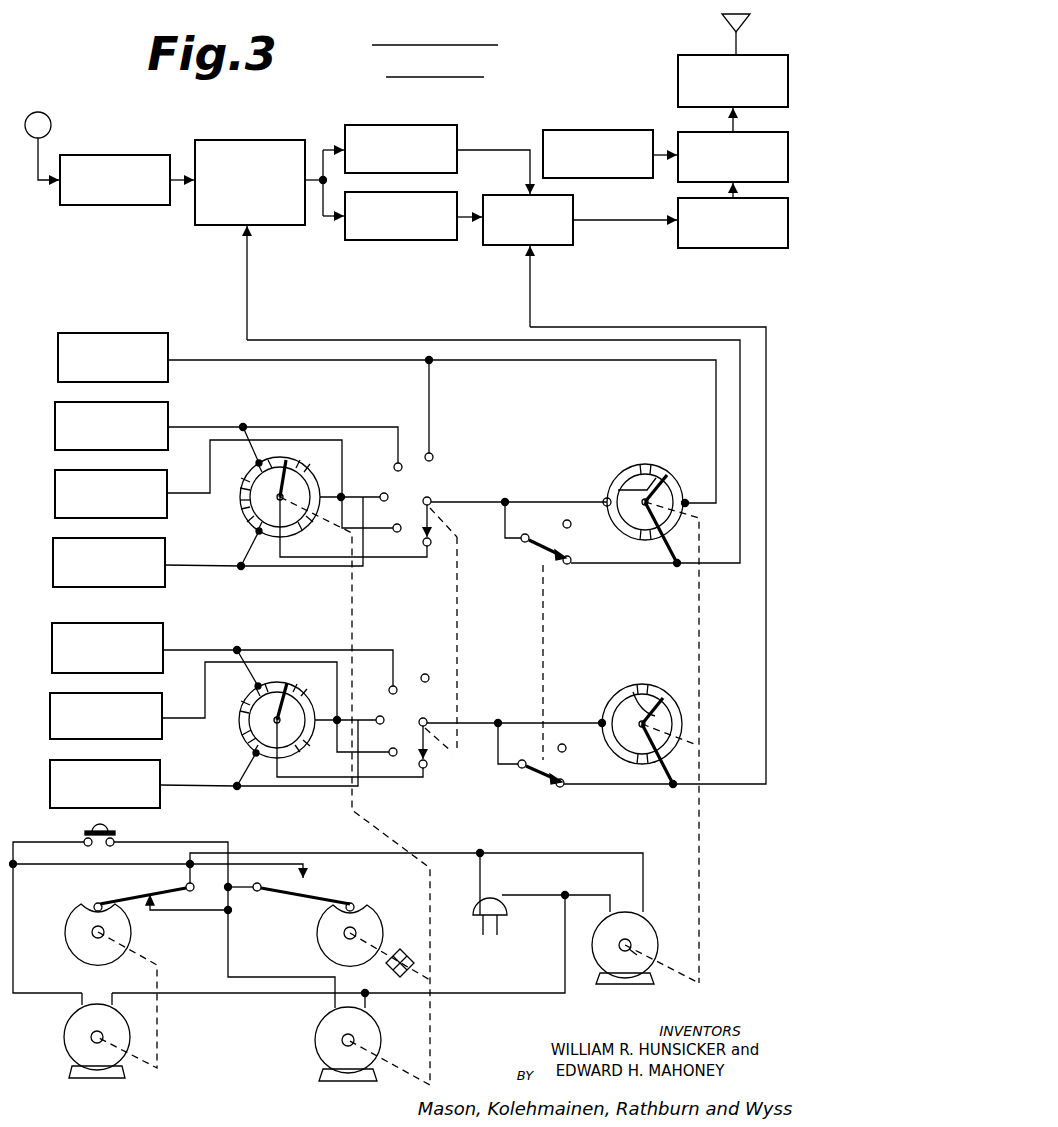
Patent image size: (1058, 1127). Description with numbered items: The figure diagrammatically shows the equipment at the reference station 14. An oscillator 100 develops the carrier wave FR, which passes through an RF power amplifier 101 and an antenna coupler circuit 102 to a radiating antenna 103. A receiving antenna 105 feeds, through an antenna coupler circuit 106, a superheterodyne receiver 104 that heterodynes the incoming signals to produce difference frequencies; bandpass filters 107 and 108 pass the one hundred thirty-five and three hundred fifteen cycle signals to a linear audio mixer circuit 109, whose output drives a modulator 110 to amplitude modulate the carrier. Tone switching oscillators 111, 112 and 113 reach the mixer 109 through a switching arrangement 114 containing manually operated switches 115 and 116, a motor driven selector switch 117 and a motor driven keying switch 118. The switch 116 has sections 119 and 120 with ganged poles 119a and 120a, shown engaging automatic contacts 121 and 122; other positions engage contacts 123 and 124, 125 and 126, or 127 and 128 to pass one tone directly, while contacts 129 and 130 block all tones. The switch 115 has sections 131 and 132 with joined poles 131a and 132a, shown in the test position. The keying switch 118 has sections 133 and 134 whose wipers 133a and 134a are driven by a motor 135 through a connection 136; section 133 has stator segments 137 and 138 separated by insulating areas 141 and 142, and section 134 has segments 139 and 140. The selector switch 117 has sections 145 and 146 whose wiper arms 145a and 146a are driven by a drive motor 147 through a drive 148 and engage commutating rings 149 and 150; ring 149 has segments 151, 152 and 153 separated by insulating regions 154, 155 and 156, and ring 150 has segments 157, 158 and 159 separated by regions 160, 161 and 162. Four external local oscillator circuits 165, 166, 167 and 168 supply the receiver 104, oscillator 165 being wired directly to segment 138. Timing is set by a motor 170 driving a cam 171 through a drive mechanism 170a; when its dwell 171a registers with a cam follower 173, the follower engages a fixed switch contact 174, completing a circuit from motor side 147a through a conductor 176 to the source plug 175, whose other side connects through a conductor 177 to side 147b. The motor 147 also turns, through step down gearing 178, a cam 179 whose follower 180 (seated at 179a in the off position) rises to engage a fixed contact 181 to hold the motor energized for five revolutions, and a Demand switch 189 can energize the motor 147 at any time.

The reference station 14 is at (415, 106).
The oscillator 100 is at (602, 128).
The RF power amplifier 101 is at (748, 130).
The antenna coupler circuit 102 is at (678, 69).
The emitting or radiating antenna 103 is at (747, 25).
The superheterodyne receiver 104 is at (274, 140).
The receiving antenna 105 is at (40, 118).
The antenna coupler circuit 106 is at (100, 205).
The bandpass filter 107 is at (452, 126).
The bandpass filter 108 is at (370, 242).
The linear audio mixer circuit 109 is at (490, 246).
The modulator 110 is at (736, 250).
The oscillator 111 is at (54, 623).
The oscillator 112 is at (53, 693).
The oscillator 113 is at (53, 760).
The switching arrangement 114 is at (535, 428).
The manually operated switch 115 is at (546, 645).
The manually operated switch 116 is at (461, 628).
The motor driven selector switch 117 is at (346, 618).
The motor driven keying switch 118 is at (703, 642).
The switch section 119 is at (447, 523).
The movable arm or pole 119a is at (434, 512).
The switch section 120 is at (424, 735).
The movable arm or pole 120a is at (420, 740).
The fixed contact 121 is at (424, 556).
The fixed contact 122 is at (420, 776).
The fixed contact 123 is at (396, 532).
The fixed contact 124 is at (394, 757).
The fixed contact 125 is at (383, 493).
The fixed contact 126 is at (382, 716).
The switch contact 127 is at (394, 464).
The switch contact 128 is at (391, 687).
The fixed contact 129 is at (431, 450).
The fixed contact 130 is at (428, 673).
The switch section 131 is at (547, 544).
The movable pole or arm 131a is at (528, 545).
The switch section 132 is at (543, 768).
The movable pole or arm 132a is at (526, 772).
The switch section 133 is at (631, 505).
The rotatable wiper 133a is at (608, 490).
The switch section 134 is at (633, 706).
The rotatable wiper 134a is at (636, 690).
The motor 135 is at (660, 925).
The mechanical connection 136 is at (700, 830).
The stator segment 137 is at (614, 480).
The stator segment 138 is at (676, 487).
The stator segment 139 is at (612, 700).
The stator segment 140 is at (662, 698).
The insulating area 141 is at (650, 466).
The insulating area 142 is at (646, 542).
The switch section 145 is at (278, 497).
The wiper arm 145a is at (244, 486).
The switch section 146 is at (266, 718).
The wiper arm 146a is at (246, 710).
The drive motor 147 is at (343, 1053).
The side of motor 147a is at (333, 1003).
The second side of motor 147b is at (368, 1000).
The mechanical drive 148 is at (370, 835).
The commutating ring 149 is at (242, 518).
The commutating ring 150 is at (245, 737).
The conducting stator segment 151 is at (268, 460).
The conducting stator segment 152 is at (256, 531).
The conducting stator segment 153 is at (300, 524).
The insulating region 154 is at (300, 467).
The insulating region 155 is at (242, 500).
The insulating region 156 is at (300, 550).
The conducting segment 157 is at (265, 683).
The conducting segment 158 is at (263, 757).
The conducting segment 159 is at (312, 742).
The insulating region 160 is at (290, 690).
The insulating region 161 is at (240, 720).
The insulating region 162 is at (290, 760).
The external local oscillator circuit 165 is at (58, 333).
The external local oscillator circuit 166 is at (56, 402).
The external local oscillator circuit 167 is at (56, 470).
The external local oscillator circuit 168 is at (55, 538).
The motor 170 is at (70, 1013).
The drive mechanism 170a is at (160, 1022).
The cam 171 is at (62, 930).
The dwell or reduced portion 171a is at (92, 902).
The cam follower 173 is at (118, 885).
The fixed switch contact 174 is at (160, 900).
The plug 175 is at (487, 892).
The conductor 176 is at (232, 945).
The conductor 177 is at (462, 996).
The five to one step down gearing 178 is at (412, 950).
The cam 179 is at (318, 942).
The cam follower 179a is at (364, 904).
The follower 180 is at (345, 880).
The fixed contact 181 is at (308, 872).
The manually operated Demand switch 189 is at (118, 833).